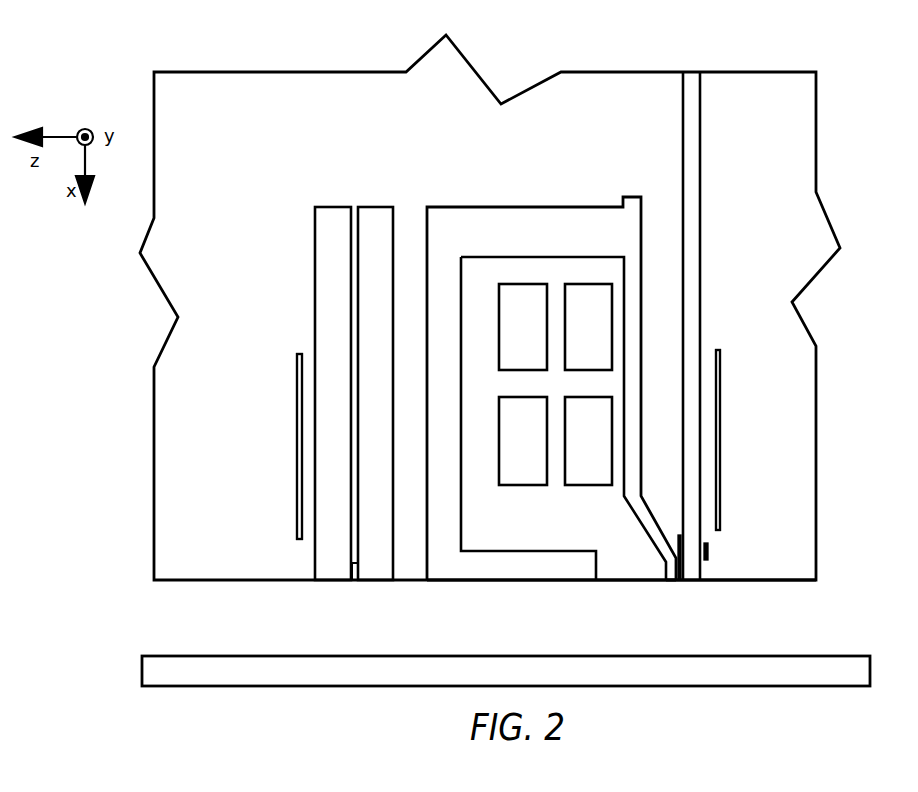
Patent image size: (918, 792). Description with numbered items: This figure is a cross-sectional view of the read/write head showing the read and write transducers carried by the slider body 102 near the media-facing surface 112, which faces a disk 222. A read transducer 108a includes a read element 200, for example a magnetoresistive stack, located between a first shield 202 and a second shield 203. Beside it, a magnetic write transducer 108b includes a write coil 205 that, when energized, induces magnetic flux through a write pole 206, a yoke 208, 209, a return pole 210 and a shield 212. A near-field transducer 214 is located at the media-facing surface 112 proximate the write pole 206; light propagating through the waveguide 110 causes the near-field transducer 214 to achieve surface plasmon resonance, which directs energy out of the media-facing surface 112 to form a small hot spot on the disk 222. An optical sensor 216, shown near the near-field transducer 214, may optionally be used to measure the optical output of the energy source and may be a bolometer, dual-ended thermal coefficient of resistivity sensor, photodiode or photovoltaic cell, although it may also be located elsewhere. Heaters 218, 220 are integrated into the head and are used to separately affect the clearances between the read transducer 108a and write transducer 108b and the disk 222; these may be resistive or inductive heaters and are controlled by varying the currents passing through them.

The slider body 102 is at (315, 72).
The waveguide 110 is at (692, 72).
The media-facing surface 112 is at (800, 580).
The read transducer 108a is at (280, 309).
The magnetic write transducer 108b is at (745, 450).
The read element 200 is at (355, 580).
The shield 202 is at (329, 207).
The shield 203 is at (374, 207).
The write coil 205 is at (576, 286).
The write pole 206 is at (672, 583).
The yoke 208 is at (640, 327).
The yoke 209 is at (505, 207).
The return pole 210 is at (461, 520).
The shield 212 is at (533, 567).
The near-field transducer 214 is at (679, 537).
The optical sensor 216 is at (706, 560).
The heater 218 is at (297, 515).
The heater 220 is at (720, 510).
The disk 222 is at (184, 656).